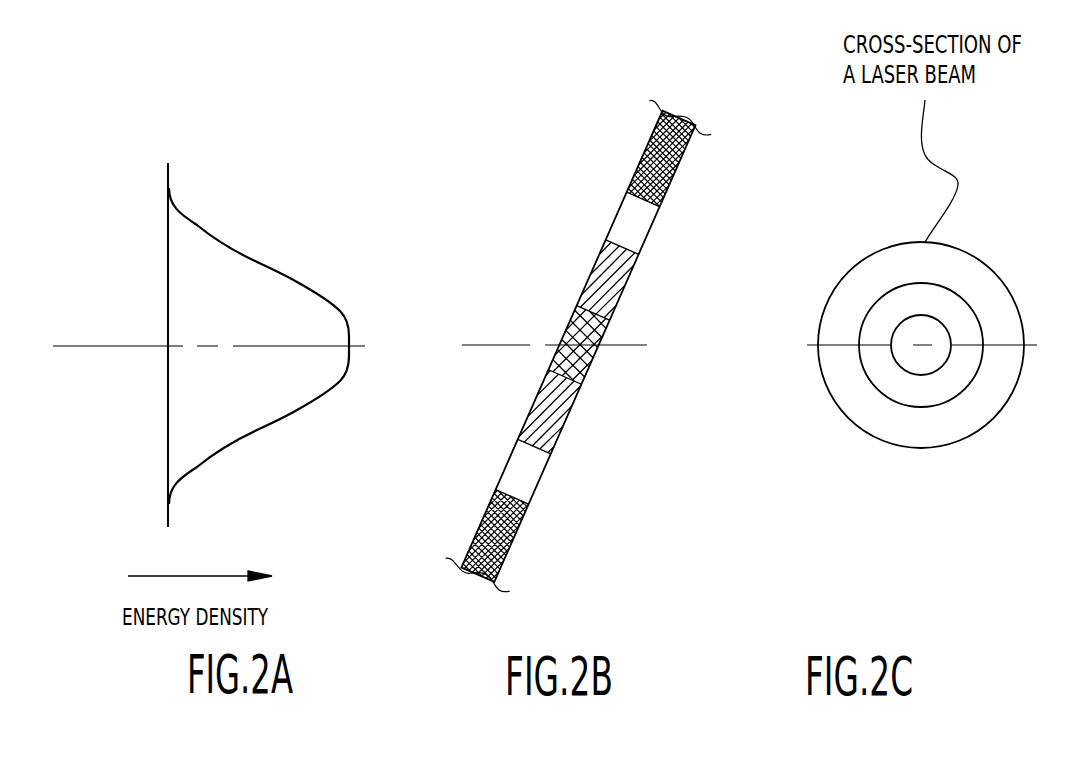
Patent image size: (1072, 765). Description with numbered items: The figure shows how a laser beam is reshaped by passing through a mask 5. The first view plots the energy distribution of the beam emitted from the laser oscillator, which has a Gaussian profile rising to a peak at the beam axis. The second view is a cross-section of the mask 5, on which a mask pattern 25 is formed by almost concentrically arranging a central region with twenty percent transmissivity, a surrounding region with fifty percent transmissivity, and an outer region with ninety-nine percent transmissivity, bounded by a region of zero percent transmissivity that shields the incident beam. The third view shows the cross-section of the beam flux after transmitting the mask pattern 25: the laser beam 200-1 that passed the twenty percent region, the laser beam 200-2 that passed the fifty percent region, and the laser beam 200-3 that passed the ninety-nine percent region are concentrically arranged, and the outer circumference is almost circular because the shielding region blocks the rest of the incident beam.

In FIG. 2B, the mask 5 is at (578, 313).
In FIG. 2B, the mask pattern 25 is at (482, 294).
In FIG. 2C, the laser beam having passed the region with transmissivity of 20% 200-1 is at (927, 357).
In FIG. 2C, the laser beam having passed the region with transmissivity of 50% 200-2 is at (897, 387).
In FIG. 2C, the laser beam having passed the region with transmissivity of 99% 200-3 is at (842, 385).